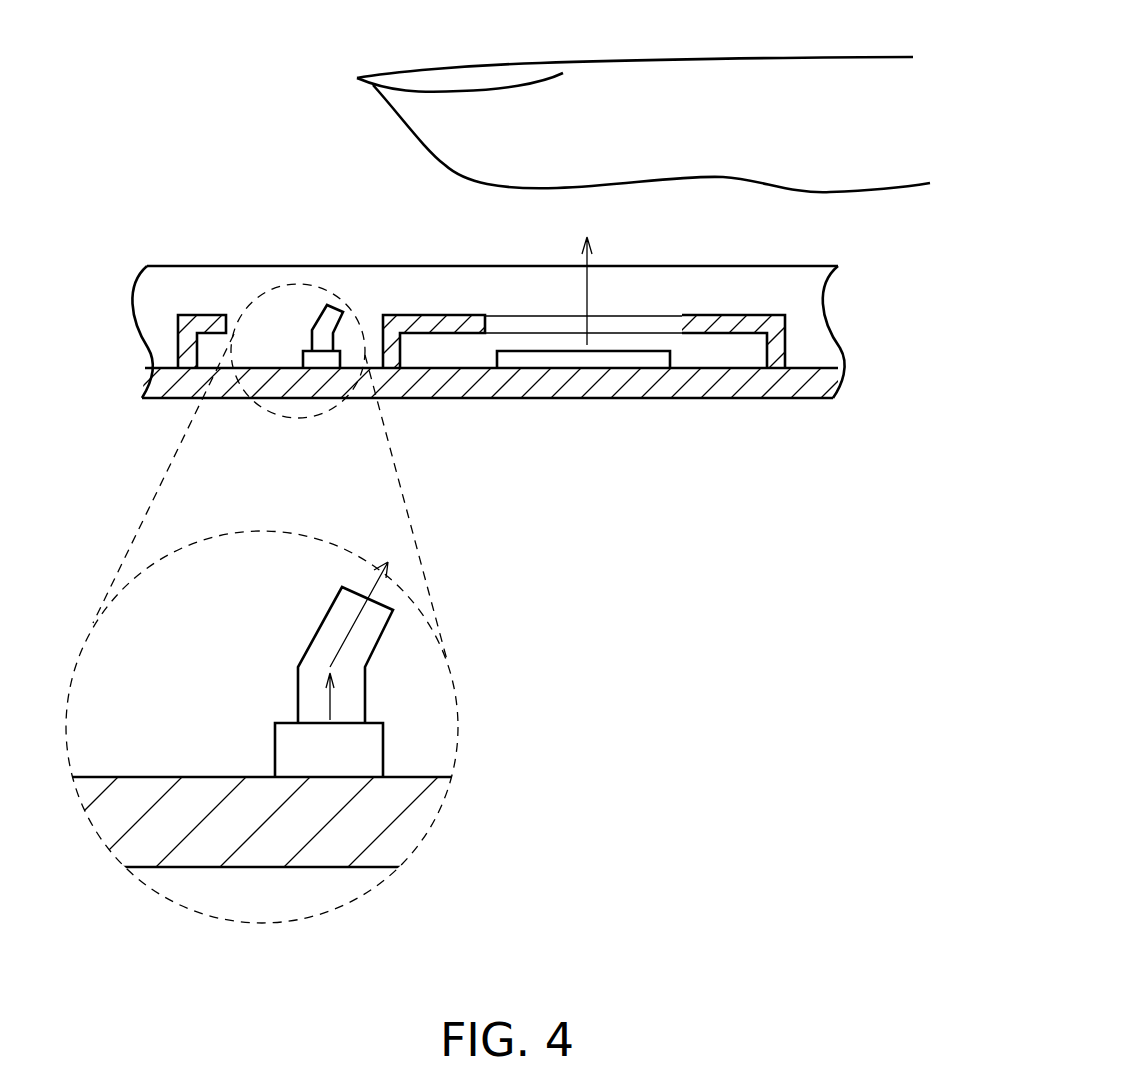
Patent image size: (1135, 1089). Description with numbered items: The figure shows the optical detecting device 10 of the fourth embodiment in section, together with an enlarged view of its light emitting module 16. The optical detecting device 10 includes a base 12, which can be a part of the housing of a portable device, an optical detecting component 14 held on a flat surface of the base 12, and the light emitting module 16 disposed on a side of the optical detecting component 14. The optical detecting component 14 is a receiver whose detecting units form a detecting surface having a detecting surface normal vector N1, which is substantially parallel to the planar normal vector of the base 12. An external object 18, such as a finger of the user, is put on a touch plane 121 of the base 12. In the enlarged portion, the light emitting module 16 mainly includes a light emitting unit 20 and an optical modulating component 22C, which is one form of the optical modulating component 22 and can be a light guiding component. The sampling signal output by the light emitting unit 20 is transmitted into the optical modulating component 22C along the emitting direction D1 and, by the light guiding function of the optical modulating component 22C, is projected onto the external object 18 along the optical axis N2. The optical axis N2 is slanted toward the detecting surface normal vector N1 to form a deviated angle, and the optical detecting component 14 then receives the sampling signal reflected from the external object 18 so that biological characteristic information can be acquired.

The optical detecting device 10 is at (165, 233).
The base 12 is at (733, 382).
The optical detecting component 14 is at (642, 358).
The light emitting module 16 is at (337, 303).
The external object 18 is at (817, 70).
The light emitting unit 20 is at (360, 750).
The optical modulating component 22 is at (345, 655).
The optical modulating component 22C is at (371, 640).
The touch plane 121 is at (550, 312).
The detecting surface normal vector N1 is at (587, 276).
The optical axis N2 is at (361, 598).
The emitting direction D1 is at (345, 696).